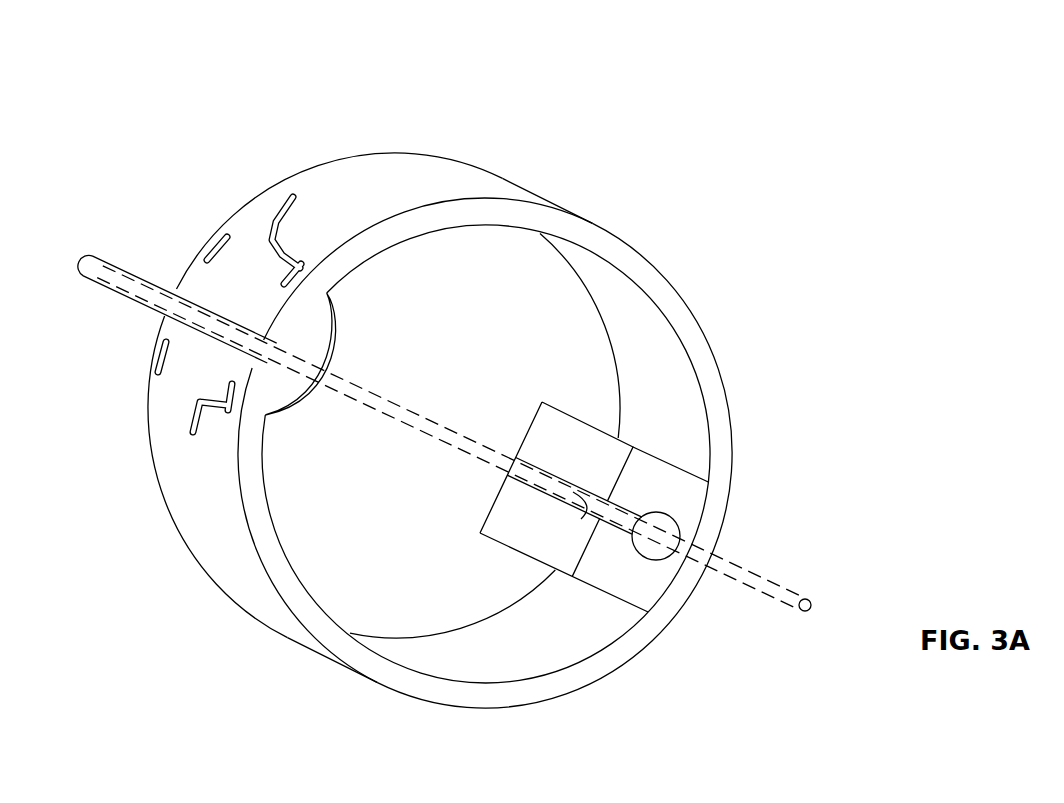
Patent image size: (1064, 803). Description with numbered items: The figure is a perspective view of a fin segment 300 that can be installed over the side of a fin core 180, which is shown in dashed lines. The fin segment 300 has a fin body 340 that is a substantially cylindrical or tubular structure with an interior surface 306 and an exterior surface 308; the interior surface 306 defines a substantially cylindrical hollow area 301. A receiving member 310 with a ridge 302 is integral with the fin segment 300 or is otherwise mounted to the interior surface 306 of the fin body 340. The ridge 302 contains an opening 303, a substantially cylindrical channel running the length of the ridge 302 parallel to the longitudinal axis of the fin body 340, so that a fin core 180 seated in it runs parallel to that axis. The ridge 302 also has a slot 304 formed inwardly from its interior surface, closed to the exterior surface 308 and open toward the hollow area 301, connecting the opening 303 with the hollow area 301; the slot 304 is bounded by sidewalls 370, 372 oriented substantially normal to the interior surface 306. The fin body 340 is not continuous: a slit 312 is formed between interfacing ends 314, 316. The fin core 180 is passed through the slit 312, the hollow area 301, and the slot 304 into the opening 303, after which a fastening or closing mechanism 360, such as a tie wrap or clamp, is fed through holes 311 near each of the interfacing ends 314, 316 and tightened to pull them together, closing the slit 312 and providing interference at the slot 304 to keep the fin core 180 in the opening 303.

The fin core 180 is at (805, 613).
The fin segment 300 is at (734, 102).
The hollow area 301 is at (514, 263).
The ridge 302 is at (674, 472).
The opening 303 is at (682, 536).
The slot 304 is at (576, 500).
The interior surface 306 is at (545, 653).
The exterior surface 308 is at (204, 525).
The receiving member 310 is at (611, 418).
The holes 311 is at (220, 377).
The slit 312 is at (271, 346).
The interfacing end 314 is at (228, 313).
The interfacing end 316 is at (223, 347).
The fin body 340 is at (463, 171).
The fastening or closing mechanism 360 is at (289, 198).
The sidewall 370 is at (538, 462).
The sidewall 372 is at (524, 496).